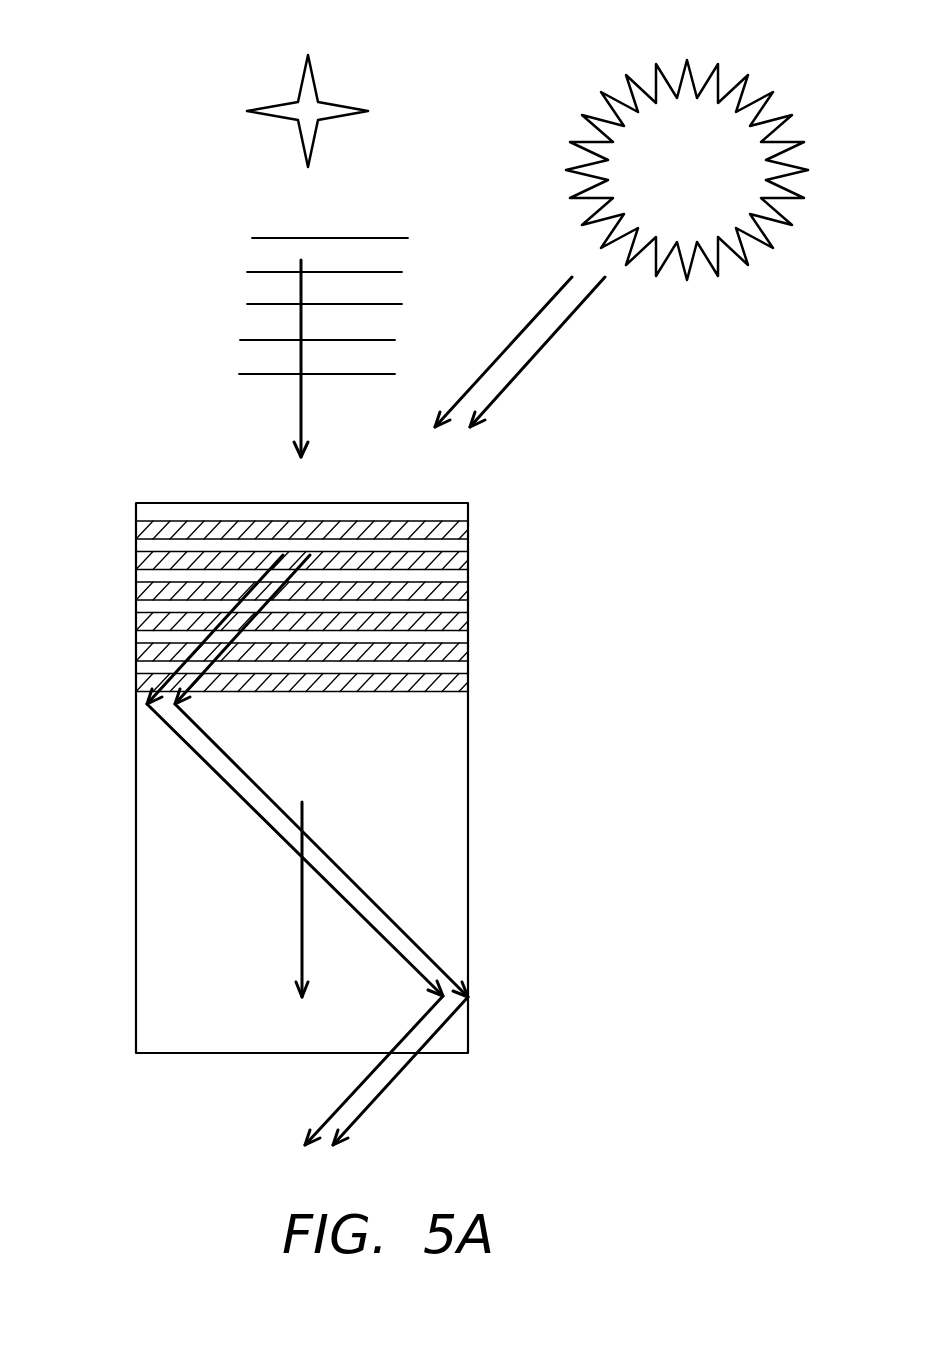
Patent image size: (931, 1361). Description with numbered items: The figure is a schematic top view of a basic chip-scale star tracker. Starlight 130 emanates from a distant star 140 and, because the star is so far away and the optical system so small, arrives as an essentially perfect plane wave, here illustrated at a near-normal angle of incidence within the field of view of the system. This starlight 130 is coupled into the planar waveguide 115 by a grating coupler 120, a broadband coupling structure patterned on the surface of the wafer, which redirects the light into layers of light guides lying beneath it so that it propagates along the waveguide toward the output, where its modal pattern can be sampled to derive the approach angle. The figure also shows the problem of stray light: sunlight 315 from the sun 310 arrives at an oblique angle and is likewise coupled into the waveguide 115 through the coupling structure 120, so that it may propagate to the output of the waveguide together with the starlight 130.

The planar waveguide 115 is at (136, 793).
The grating coupler 120 is at (482, 520).
The starlight 130 is at (258, 304).
The star 140 is at (297, 101).
The sun 310 is at (718, 62).
The sunlight 315 is at (508, 385).